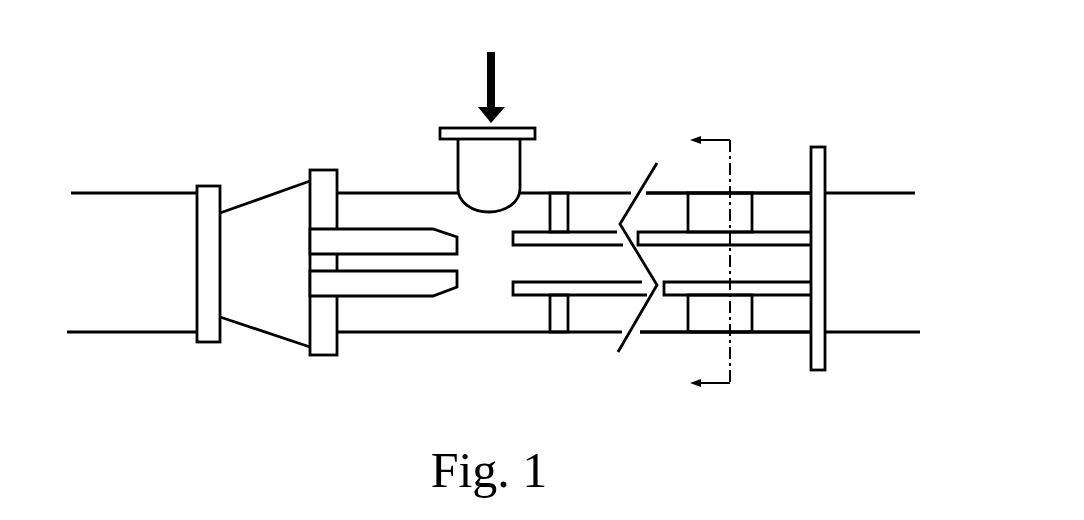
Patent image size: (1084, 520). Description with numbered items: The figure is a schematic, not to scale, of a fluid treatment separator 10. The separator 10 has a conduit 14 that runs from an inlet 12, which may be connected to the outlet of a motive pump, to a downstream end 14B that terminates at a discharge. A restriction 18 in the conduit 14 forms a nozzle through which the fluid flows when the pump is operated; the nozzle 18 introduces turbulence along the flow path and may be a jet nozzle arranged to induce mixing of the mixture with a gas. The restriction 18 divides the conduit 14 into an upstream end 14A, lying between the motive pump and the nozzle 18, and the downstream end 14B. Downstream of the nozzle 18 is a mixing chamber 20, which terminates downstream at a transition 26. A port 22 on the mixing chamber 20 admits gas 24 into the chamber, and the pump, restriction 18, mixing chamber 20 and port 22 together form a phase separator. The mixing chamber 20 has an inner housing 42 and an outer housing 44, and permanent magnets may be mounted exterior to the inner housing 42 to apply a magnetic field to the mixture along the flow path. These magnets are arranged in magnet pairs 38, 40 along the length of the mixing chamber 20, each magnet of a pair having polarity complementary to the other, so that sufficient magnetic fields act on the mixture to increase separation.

The fluid treatment separator 10 is at (237, 115).
The inlet 12 is at (286, 360).
The conduit 14 is at (463, 333).
The upstream end 14A is at (163, 333).
The downstream end 14B is at (840, 334).
The restriction 18 is at (380, 288).
The mixing chamber 20 is at (745, 295).
The port 22 is at (520, 163).
The gas 24 is at (487, 67).
The transition 26 is at (818, 147).
The magnet pair member 38 is at (745, 334).
The magnet pair member 40 is at (707, 193).
The inner housing 42 is at (593, 295).
The outer housing 44 is at (593, 193).